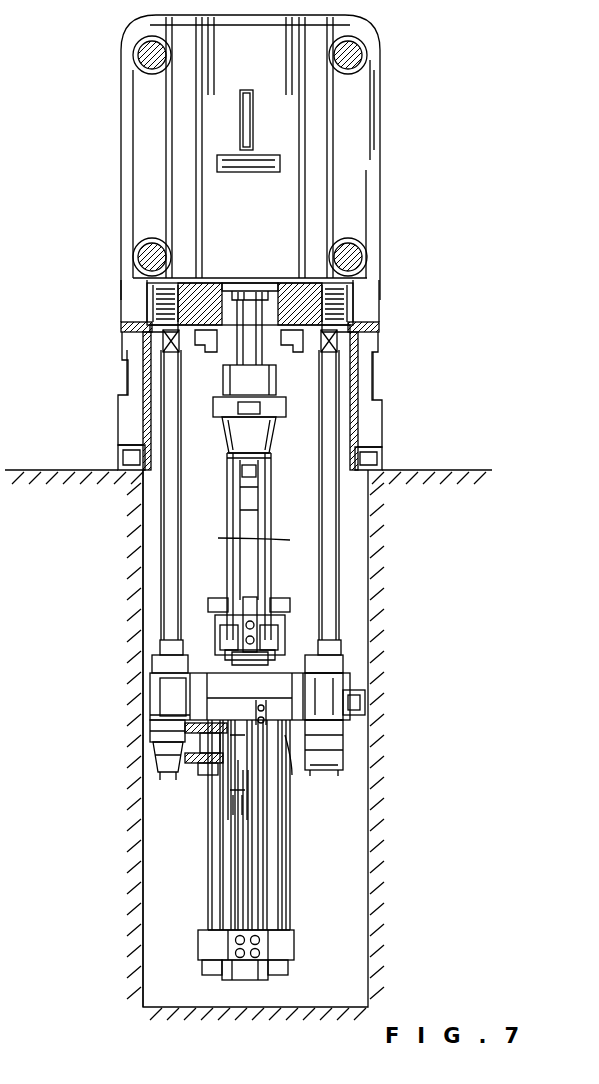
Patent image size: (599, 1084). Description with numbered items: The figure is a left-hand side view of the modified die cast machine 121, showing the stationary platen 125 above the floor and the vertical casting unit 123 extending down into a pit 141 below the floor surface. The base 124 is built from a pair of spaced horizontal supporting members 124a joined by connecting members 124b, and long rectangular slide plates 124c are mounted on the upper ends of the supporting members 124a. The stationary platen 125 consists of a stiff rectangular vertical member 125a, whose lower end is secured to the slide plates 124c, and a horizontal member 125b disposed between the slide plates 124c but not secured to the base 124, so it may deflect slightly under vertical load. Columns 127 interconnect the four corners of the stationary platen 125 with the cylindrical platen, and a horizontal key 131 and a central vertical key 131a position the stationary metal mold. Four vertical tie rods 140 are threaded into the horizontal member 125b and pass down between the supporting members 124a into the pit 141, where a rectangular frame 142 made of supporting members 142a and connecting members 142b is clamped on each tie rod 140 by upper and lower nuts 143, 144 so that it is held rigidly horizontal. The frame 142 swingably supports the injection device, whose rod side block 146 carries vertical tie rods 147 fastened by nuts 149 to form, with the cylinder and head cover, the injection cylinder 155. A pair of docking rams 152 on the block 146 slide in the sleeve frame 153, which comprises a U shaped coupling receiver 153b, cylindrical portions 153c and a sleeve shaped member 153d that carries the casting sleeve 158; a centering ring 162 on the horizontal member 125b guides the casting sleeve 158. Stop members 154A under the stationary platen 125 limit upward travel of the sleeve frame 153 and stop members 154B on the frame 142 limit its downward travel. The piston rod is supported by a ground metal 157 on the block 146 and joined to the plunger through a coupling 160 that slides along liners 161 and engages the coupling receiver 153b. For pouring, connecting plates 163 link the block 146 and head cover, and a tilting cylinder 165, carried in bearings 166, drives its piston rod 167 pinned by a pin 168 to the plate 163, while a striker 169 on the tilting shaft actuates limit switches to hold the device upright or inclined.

The modified die cast machine 121 is at (397, 84).
The vertical casting unit 123 is at (338, 793).
The base 124 is at (387, 377).
The supporting members 124a is at (122, 405).
The connecting members 124b is at (151, 427).
The slide plates 124c is at (134, 315).
The stationary platen 125 is at (388, 176).
The vertical member 125a is at (372, 122).
The horizontal member 125b is at (290, 288).
The columns 127 is at (140, 47).
The horizontal key 131 is at (262, 155).
The vertical key 131a is at (253, 90).
The vertical tie rods 140 is at (166, 559).
The pit 141 is at (146, 823).
The rectangular frame 142 is at (150, 700).
The supporting members 142a is at (345, 685).
The connecting member 142b is at (160, 752).
The upper nuts 143 is at (160, 658).
The lower nuts 144 is at (165, 775).
The rod side block 146 is at (287, 745).
The vertical tie rods 147 is at (208, 912).
The nuts 149 is at (215, 974).
The docking rams 152 is at (274, 712).
The sleeve frame 153 is at (218, 538).
The coupling receiver 153b is at (285, 628).
The cylindrical portions 153c is at (255, 563).
The sleeve shaped member 153d is at (227, 389).
The stop members 154A is at (210, 353).
The stop members 154B is at (224, 654).
The injection cylinder 155 is at (303, 868).
The ground metal 157 is at (173, 697).
The casting sleeve 158 is at (222, 300).
The coupling 160 is at (215, 598).
The liners 161 is at (228, 500).
The centering ring 162 is at (241, 287).
The connecting plates 163 is at (234, 838).
The tilting cylinder 165 is at (223, 800).
The bearings 166 is at (192, 784).
The piston rod 167 is at (240, 858).
The pin 168 is at (270, 818).
The striker 169 is at (362, 712).